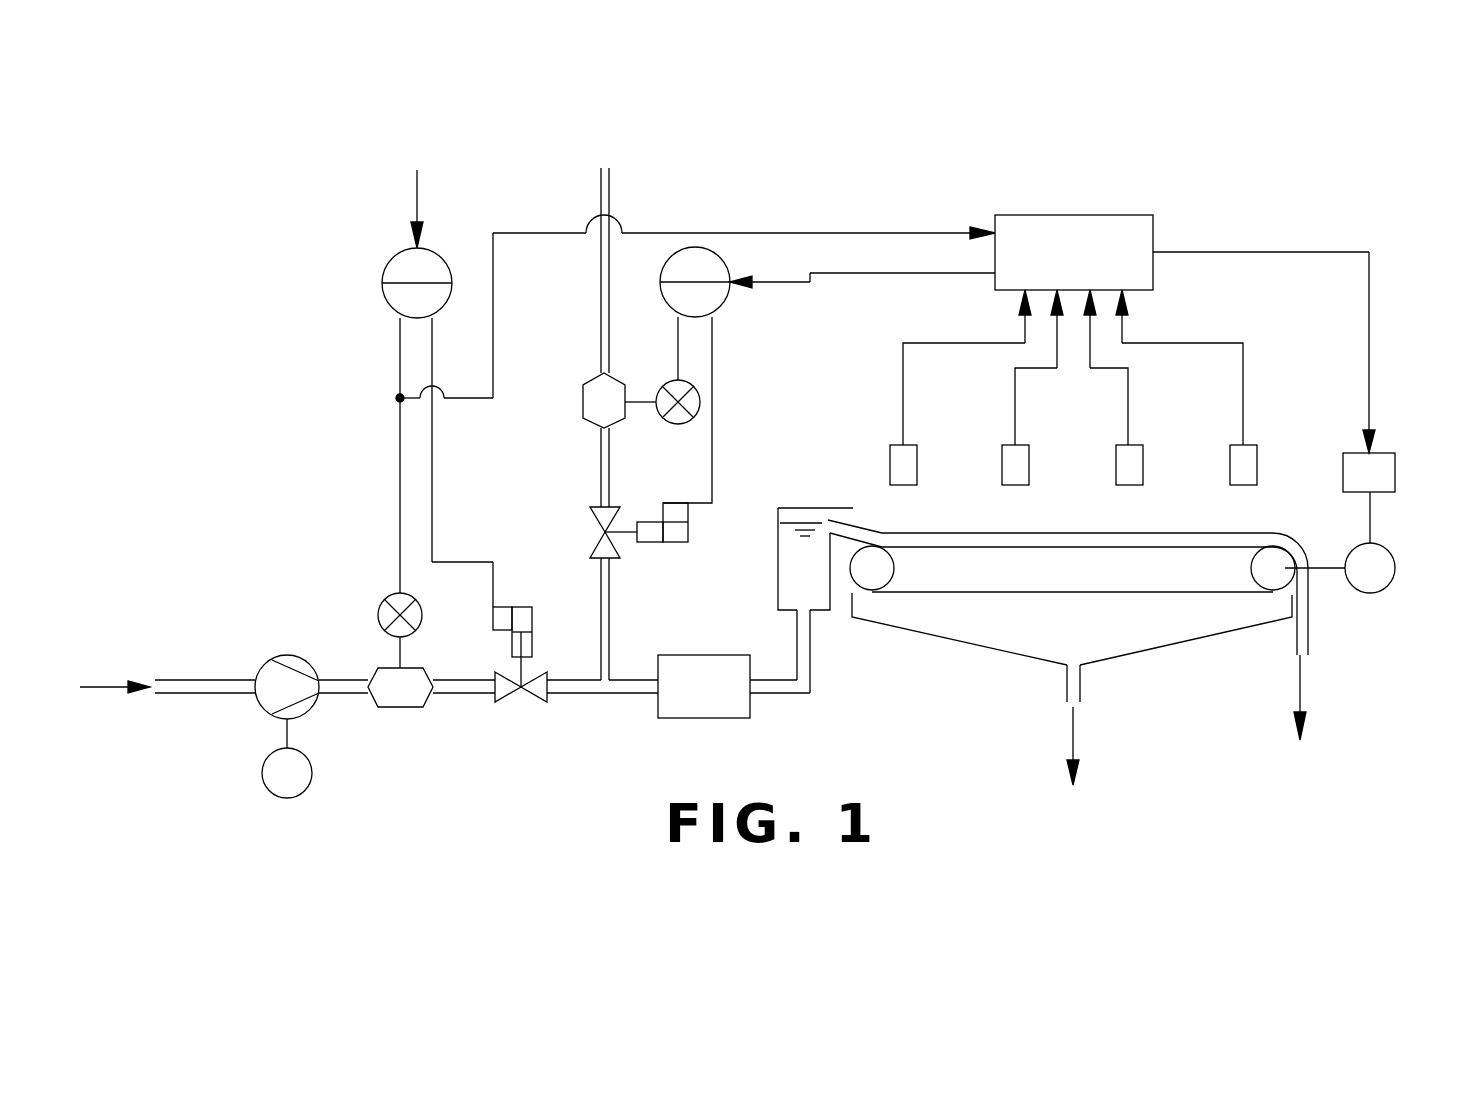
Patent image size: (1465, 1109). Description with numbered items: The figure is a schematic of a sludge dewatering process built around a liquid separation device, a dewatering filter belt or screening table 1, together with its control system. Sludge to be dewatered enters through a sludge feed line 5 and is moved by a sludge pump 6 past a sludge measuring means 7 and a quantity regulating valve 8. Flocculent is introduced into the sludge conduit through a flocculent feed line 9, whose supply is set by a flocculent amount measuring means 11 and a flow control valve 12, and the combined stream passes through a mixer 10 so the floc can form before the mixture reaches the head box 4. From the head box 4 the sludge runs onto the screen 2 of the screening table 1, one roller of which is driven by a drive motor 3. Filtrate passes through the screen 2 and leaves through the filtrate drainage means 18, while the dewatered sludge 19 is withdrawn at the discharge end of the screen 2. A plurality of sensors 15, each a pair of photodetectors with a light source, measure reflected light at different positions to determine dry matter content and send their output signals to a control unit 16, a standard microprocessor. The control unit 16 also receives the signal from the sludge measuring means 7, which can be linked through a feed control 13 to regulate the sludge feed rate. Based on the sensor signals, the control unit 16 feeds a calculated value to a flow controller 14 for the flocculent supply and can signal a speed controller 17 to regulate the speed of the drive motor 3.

The dewatering filter belt 1 is at (985, 578).
The screen 2 is at (1045, 590).
The drive motor 3 is at (1392, 585).
The head box 4 is at (790, 580).
The sludge feed line 5 is at (205, 688).
The sludge pump 6 is at (293, 677).
The sludge measuring means 7 is at (405, 702).
The quantity regulating valve 8 is at (542, 700).
The flocculent feed line 9 is at (610, 608).
The mixer 10 is at (698, 690).
The flocculent amount measuring means 11 is at (595, 390).
The flow control valve 12 is at (595, 520).
The feed control 13 is at (395, 300).
The flow controller 14 is at (724, 272).
The sensors 15 is at (1135, 460).
The control unit 16 is at (1113, 230).
The speed controller 17 is at (1392, 466).
The filtrate drainage means 18 is at (1080, 684).
The dewatered sludge 19 is at (1305, 630).